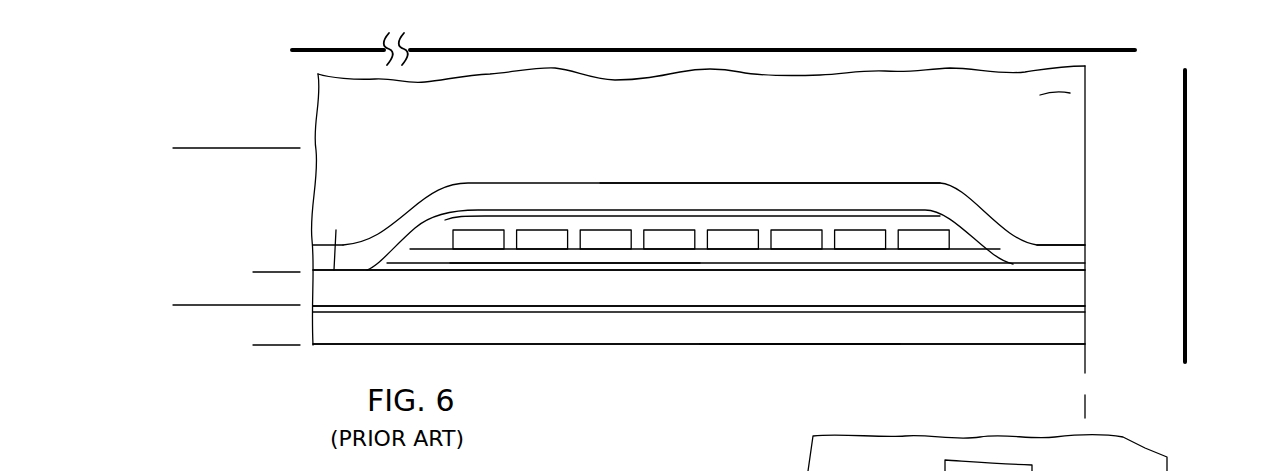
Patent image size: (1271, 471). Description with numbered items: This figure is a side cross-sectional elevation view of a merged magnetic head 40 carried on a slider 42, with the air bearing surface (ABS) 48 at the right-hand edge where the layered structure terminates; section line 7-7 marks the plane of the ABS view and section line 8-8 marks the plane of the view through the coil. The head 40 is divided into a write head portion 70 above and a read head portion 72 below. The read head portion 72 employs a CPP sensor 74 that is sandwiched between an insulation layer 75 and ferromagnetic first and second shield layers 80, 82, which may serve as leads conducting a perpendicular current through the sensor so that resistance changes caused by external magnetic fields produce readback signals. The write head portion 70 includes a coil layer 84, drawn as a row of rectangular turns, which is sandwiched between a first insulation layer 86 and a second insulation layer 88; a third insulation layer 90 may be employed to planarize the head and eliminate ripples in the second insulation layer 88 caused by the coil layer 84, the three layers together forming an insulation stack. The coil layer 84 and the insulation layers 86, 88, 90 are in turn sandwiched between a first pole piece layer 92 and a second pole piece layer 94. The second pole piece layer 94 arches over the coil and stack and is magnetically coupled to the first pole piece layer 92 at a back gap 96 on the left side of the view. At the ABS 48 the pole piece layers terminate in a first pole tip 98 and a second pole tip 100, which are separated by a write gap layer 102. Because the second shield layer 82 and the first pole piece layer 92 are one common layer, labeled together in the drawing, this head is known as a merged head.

The section line 7- 7 is at (1203, 345).
The section line 8- 8 is at (1111, 34).
The merged magnetic head 40 is at (290, 74).
The slider 42 is at (1065, 97).
The air bearing surface 48 is at (1084, 378).
The write head portion 70 is at (269, 258).
The read head portion 72 is at (269, 359).
The CPP sensor 74 is at (1085, 308).
The insulation layer 75 is at (650, 312).
The first shield layer 80 is at (832, 328).
The second shield layer 82 is at (699, 342).
The first pole piece layer 92 is at (935, 288).
The coil layer 84 is at (739, 240).
The first insulation layer 86 is at (552, 260).
The second insulation layer 88 is at (968, 242).
The third insulation layer 90 is at (476, 214).
The second pole piece layer 94 is at (845, 185).
The back gap 96 is at (334, 238).
The first pole tip 98 is at (1085, 288).
The second pole tip 100 is at (1080, 253).
The write gap layer 102 is at (1078, 270).